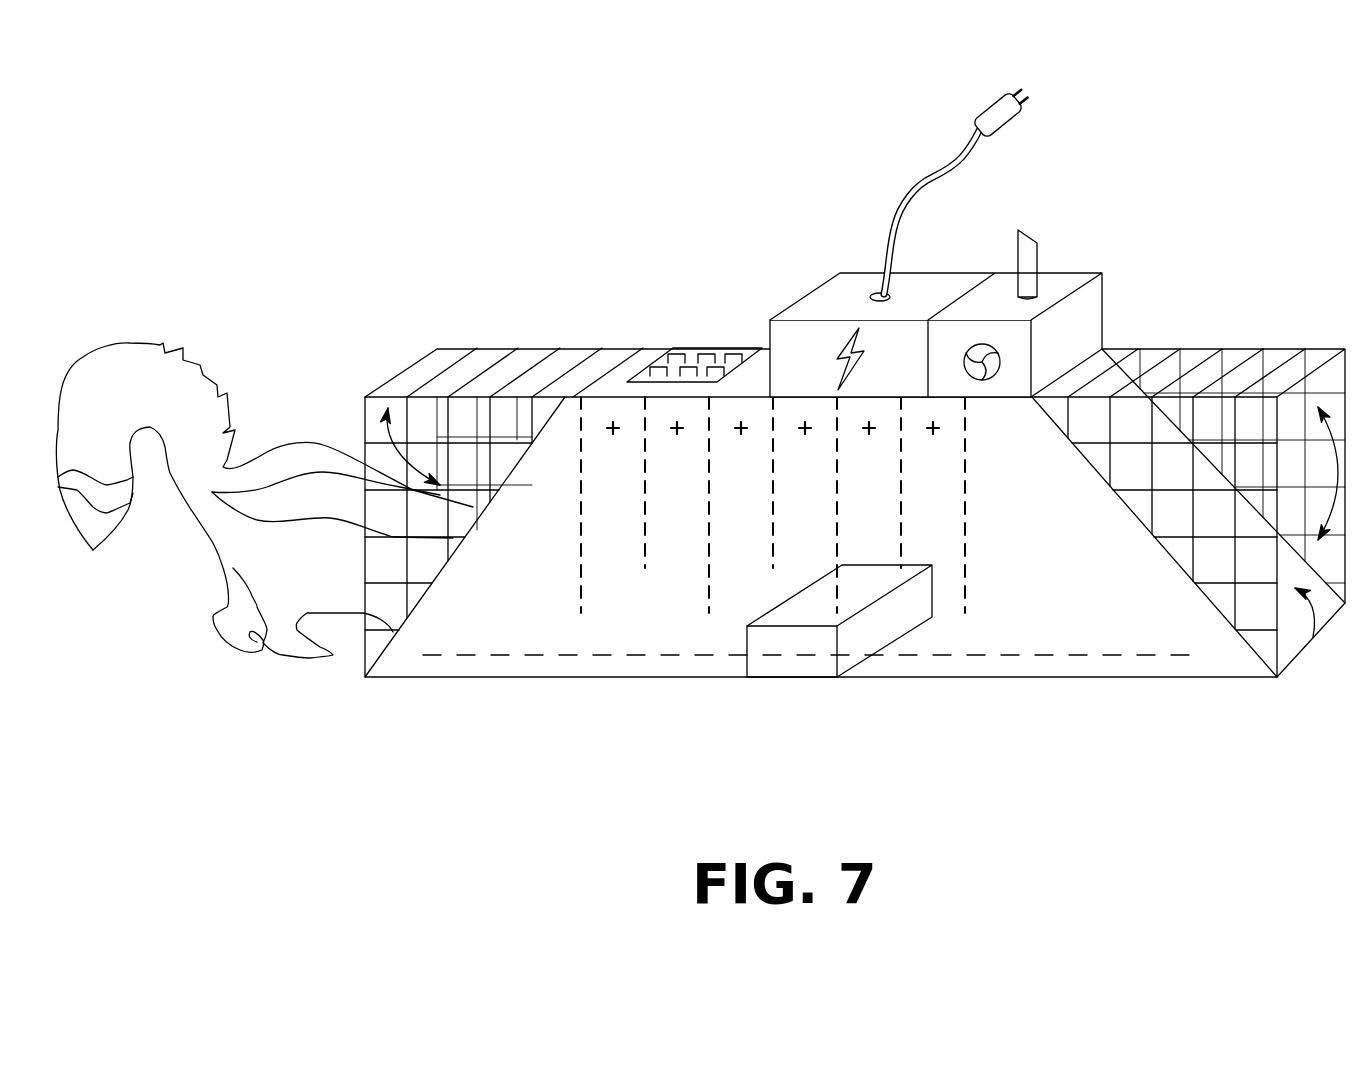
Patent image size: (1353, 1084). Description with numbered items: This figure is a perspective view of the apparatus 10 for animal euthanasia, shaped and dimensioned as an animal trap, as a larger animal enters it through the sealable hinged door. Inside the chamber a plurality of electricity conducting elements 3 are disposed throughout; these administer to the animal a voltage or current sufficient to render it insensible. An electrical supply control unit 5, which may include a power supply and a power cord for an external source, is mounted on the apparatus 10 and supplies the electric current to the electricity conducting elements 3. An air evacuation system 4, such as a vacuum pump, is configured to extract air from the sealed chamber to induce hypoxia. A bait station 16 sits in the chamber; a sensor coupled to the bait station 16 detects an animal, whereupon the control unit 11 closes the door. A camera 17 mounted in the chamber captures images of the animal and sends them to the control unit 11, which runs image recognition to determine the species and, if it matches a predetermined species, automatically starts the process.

The apparatus 10 is at (441, 229).
The control unit 11 is at (675, 308).
The electrical supply control unit 5 is at (805, 243).
The air evacuation system 4 is at (1052, 217).
The electricity conducting elements 3 is at (695, 572).
The bait station 16 is at (805, 655).
The camera 17 is at (503, 593).